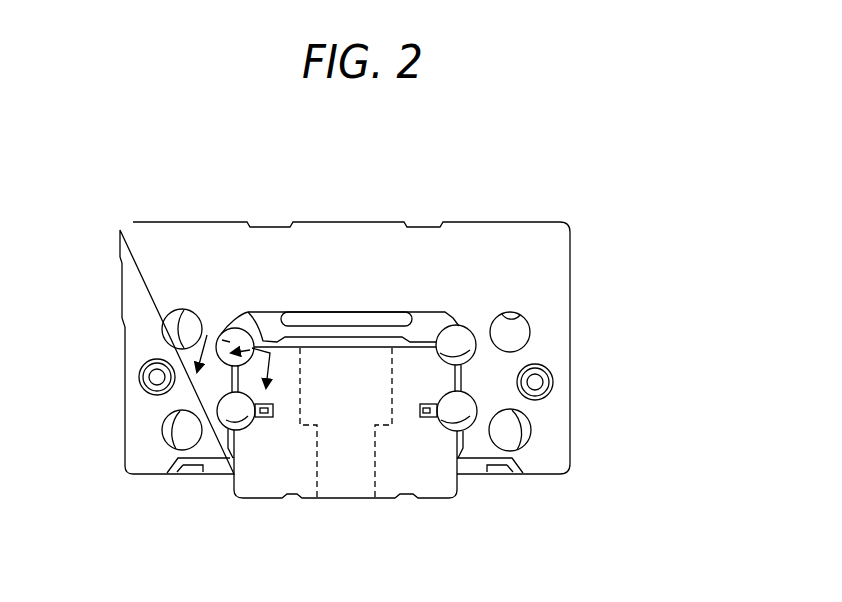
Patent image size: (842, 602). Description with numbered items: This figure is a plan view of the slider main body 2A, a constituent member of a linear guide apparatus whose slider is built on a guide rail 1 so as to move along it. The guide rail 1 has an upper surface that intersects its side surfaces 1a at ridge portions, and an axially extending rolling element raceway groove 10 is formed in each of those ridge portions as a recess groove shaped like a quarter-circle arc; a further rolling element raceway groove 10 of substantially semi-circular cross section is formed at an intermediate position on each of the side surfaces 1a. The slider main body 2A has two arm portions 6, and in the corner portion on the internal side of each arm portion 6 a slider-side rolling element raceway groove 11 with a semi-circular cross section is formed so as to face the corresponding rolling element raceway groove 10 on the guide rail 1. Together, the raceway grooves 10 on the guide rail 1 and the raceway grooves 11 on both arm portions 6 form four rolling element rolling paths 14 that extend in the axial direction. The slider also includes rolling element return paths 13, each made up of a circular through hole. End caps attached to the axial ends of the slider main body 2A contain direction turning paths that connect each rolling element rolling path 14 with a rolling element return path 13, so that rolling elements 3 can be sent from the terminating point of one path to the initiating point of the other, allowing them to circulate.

The guide rail 1 is at (348, 482).
The side surfaces 1a is at (226, 490).
The slider main body 2A is at (434, 198).
The rolling elements 3 is at (462, 404).
The arm portions 6 is at (548, 413).
The rolling element raceway groove 10 is at (224, 424).
The rolling element raceway groove 11 is at (225, 413).
The rolling element return paths 13 is at (164, 343).
The rolling element rolling paths 14 is at (252, 349).